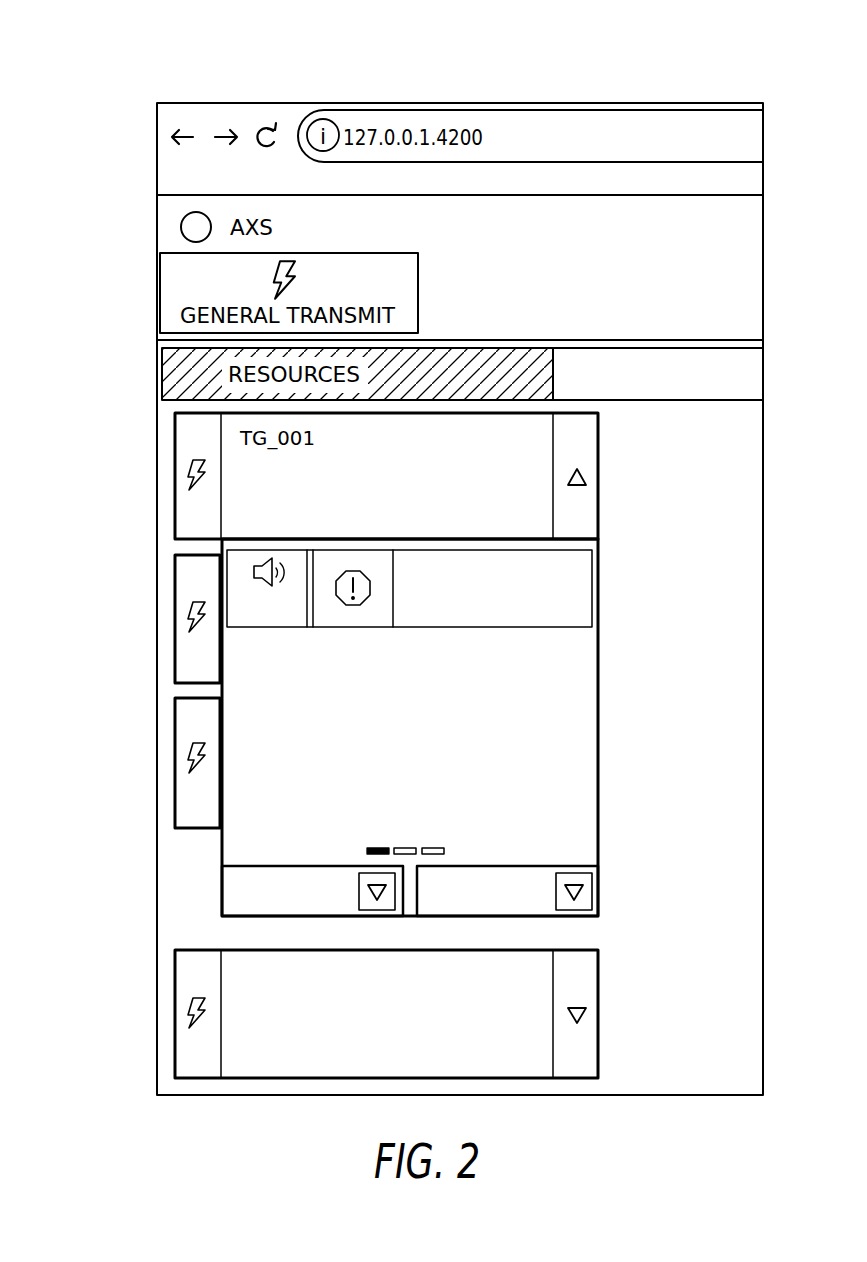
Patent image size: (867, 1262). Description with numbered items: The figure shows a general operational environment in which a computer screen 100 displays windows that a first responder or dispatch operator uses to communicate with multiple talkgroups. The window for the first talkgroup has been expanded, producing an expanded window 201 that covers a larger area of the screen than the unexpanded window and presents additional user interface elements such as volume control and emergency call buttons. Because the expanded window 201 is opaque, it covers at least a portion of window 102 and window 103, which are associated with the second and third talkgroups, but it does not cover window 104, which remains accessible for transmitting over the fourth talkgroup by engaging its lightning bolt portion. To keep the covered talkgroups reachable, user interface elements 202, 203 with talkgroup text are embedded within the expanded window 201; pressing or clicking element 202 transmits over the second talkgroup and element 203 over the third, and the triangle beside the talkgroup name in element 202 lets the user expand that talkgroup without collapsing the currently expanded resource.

The computer screen 100 is at (100, 32).
The window 102 is at (175, 620).
The window 103 is at (175, 762).
The window 104 is at (175, 1023).
The expanded window 201 is at (560, 710).
The user interface element 202 is at (540, 875).
The user interface element 203 is at (237, 893).